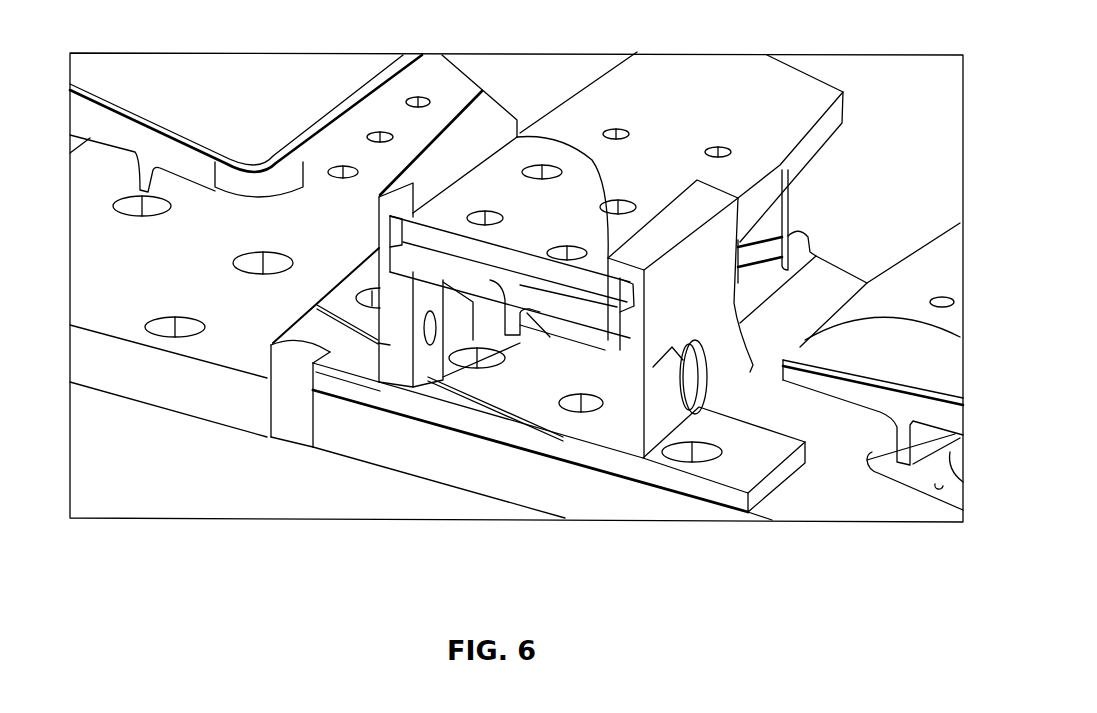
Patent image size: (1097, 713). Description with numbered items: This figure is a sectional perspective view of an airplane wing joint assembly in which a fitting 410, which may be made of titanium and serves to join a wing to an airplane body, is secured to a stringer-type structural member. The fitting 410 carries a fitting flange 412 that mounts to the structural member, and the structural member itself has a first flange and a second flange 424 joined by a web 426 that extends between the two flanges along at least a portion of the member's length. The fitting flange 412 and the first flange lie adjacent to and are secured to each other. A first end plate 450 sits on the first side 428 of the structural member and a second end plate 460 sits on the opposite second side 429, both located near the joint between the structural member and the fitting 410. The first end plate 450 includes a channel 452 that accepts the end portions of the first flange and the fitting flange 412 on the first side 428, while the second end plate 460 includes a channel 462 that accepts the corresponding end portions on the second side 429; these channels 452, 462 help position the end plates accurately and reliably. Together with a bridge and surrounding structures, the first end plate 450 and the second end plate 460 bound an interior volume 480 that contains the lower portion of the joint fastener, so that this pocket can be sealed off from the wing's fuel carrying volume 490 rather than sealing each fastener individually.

The fitting 410 is at (265, 382).
The fitting flange 412 is at (588, 168).
The second flange 424 is at (422, 291).
The web 426 is at (497, 287).
The first side 428 is at (871, 532).
The second side 429 is at (155, 535).
The first end plate 450 is at (745, 380).
The channel 452 is at (584, 349).
The second end plate 460 is at (327, 358).
The channel 462 is at (400, 338).
The interior volume 480 is at (491, 391).
The fuel carrying volume 490 is at (520, 83).